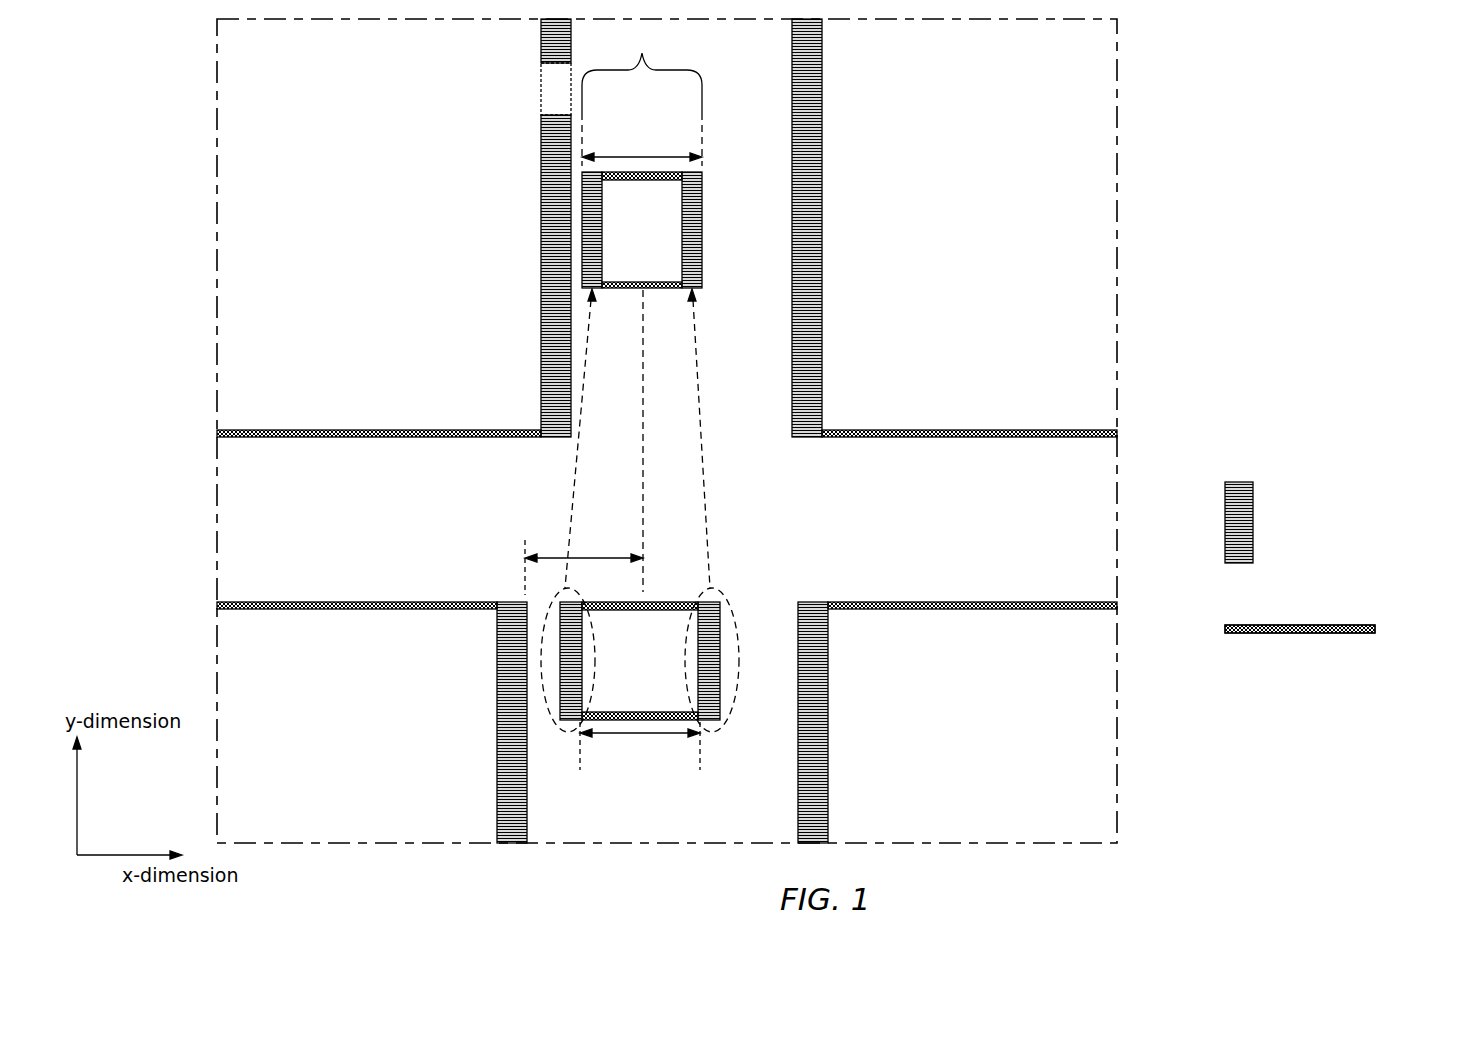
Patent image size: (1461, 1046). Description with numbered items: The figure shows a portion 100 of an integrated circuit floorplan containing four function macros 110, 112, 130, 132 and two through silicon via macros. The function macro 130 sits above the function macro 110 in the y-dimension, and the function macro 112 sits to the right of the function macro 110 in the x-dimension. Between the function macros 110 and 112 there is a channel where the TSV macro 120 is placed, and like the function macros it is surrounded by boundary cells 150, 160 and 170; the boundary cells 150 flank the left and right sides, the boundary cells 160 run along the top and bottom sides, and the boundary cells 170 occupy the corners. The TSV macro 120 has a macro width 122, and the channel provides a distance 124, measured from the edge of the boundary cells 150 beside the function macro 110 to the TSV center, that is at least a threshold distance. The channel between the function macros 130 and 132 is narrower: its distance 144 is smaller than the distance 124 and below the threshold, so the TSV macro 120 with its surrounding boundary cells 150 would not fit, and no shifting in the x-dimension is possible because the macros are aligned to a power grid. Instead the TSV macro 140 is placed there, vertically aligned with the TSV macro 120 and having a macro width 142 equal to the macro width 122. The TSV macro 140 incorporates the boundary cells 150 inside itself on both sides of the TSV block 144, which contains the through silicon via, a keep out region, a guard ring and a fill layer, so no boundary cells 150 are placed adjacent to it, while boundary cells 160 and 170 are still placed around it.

The portion of integrated circuit floorplan 100 is at (1320, 146).
The function macro 110 is at (372, 722).
The function macro 112 is at (957, 722).
The TSV macro 120 is at (640, 510).
The macro width 122 is at (627, 735).
The distance 124 is at (558, 557).
The function macro 130 is at (394, 228).
The function macro 132 is at (954, 228).
The TSV macro 140 is at (643, 54).
The macro width 142 is at (650, 157).
The TSV block 144 is at (752, 537).
The boundary cells 150 is at (1238, 480).
The boundary cells 160 is at (1327, 625).
The boundary cells 170 is at (1230, 633).